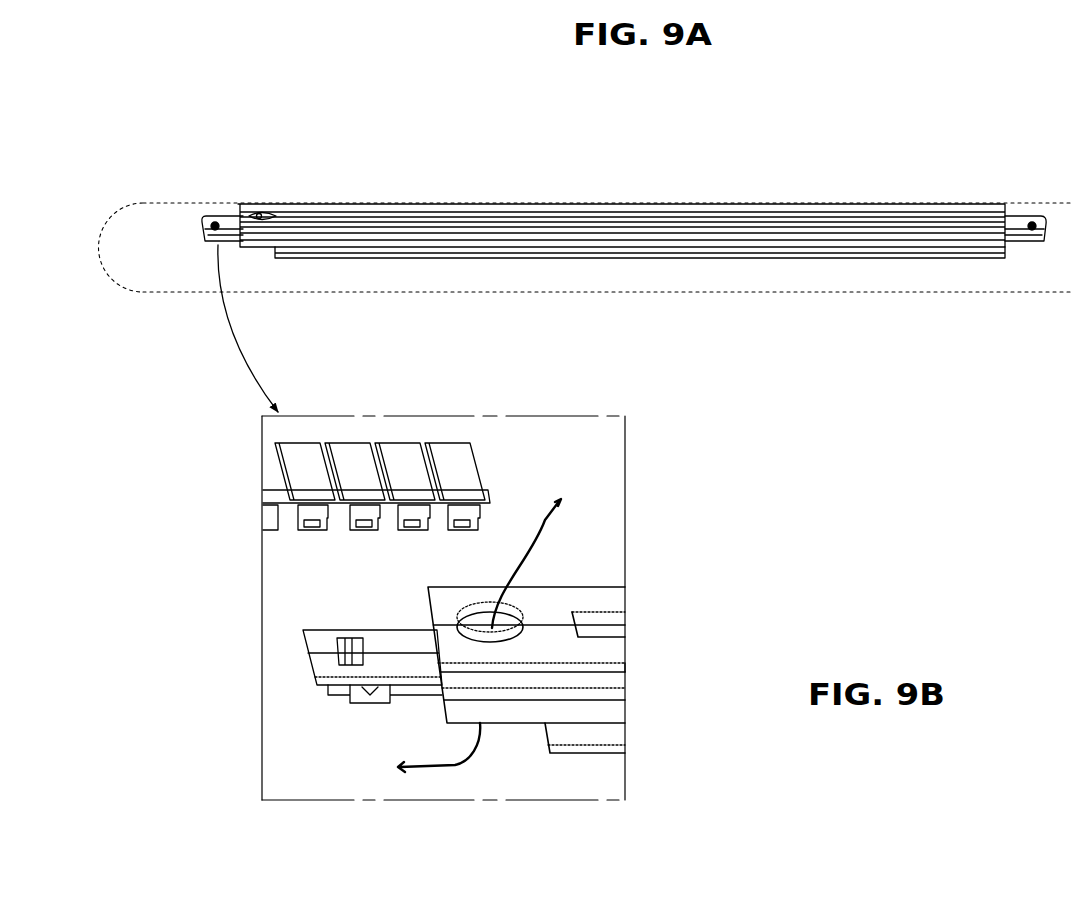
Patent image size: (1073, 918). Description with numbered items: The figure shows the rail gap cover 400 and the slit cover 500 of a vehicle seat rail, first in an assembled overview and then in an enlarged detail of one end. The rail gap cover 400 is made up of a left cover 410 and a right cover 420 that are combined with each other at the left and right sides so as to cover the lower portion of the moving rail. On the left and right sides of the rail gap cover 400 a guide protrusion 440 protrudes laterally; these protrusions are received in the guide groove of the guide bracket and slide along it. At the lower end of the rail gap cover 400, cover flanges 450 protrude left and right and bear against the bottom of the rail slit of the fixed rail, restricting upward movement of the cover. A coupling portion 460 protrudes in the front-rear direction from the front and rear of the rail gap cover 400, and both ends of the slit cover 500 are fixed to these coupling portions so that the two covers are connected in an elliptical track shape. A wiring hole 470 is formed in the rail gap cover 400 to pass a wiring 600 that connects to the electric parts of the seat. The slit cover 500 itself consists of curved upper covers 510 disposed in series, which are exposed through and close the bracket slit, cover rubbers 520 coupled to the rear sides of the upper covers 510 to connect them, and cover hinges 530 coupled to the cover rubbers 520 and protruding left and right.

In FIG. 9A, the rail gap cover 400 is at (624, 233).
In FIG. 9B, the rail gap cover 400 is at (578, 709).
In FIG. 9A, the left cover 410 is at (577, 204).
In FIG. 9B, the left cover 410 is at (614, 600).
In FIG. 9A, the right cover 420 is at (860, 258).
In FIG. 9B, the right cover 420 is at (614, 650).
In FIG. 9B, the guide protrusion 440 is at (614, 694).
In FIG. 9B, the cover flange 450 is at (612, 735).
In FIG. 9B, the coupling portion 460 is at (318, 663).
In FIG. 9B, the wiring hole 470 is at (513, 613).
In FIG. 9A, the slit cover 500 is at (973, 292).
In FIG. 9B, the slit cover 500 is at (300, 468).
In FIG. 9B, the upper cover 510 is at (360, 485).
In FIG. 9B, the cover rubber 520 is at (310, 530).
In FIG. 9B, the cover hinge 530 is at (410, 530).
In FIG. 9B, the wiring 600 is at (522, 535).